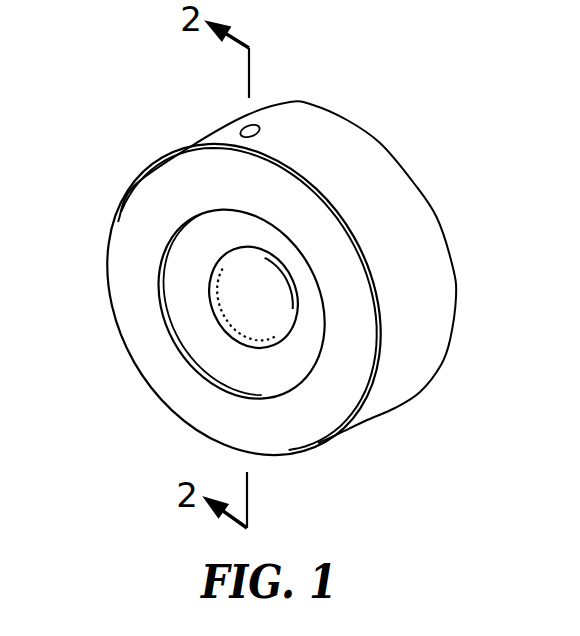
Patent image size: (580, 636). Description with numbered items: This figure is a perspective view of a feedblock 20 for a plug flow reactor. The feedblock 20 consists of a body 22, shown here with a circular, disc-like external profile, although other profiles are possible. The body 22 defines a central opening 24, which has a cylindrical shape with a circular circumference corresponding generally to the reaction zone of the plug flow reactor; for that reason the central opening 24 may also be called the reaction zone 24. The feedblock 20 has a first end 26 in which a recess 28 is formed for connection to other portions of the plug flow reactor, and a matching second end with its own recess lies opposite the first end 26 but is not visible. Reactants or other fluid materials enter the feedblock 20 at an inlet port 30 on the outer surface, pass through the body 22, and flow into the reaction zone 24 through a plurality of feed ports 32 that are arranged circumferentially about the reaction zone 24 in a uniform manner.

The feedblock 20 is at (433, 418).
The body 22 is at (380, 404).
The central opening 24 is at (251, 298).
The first end 26 is at (184, 385).
The recess 28 is at (193, 253).
The inlet port 30 is at (245, 128).
The feed ports 32 is at (216, 295).